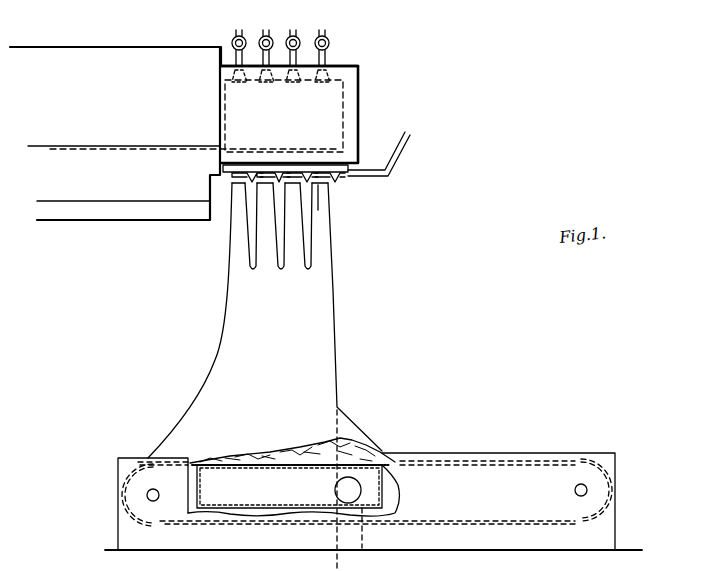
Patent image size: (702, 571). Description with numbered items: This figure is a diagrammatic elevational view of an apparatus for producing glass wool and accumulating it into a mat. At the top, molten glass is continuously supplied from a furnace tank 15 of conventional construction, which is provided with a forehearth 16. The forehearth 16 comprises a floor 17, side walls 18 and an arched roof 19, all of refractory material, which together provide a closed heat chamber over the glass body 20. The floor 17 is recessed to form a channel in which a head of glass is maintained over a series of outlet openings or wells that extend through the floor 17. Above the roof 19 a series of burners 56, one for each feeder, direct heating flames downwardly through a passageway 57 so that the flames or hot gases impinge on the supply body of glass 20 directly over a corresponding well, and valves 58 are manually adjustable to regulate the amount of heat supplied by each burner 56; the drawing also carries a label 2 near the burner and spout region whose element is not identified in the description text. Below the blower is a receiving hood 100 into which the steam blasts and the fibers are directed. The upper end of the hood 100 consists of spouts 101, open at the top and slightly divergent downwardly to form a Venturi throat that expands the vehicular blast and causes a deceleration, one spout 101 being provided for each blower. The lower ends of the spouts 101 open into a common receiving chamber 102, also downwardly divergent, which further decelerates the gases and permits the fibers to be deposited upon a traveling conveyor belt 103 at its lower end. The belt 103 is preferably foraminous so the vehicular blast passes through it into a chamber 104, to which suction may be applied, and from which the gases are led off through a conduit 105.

The furnace tank 15 is at (132, 63).
The glass body 20 is at (176, 150).
The valves 58 is at (257, 26).
The burners 56 is at (268, 55).
The conductor 2 is at (303, 52).
The arched roof 19 is at (338, 63).
The passageway 57 is at (328, 78).
The forehearth 16 is at (360, 98).
The side walls 18 is at (350, 117).
The floor 17 is at (348, 152).
The spouts 101 is at (290, 246).
The receiving chamber 102 is at (317, 327).
The receiving hood 100 is at (338, 361).
The conveyor belt 103 is at (277, 465).
The chamber 104 is at (292, 468).
The conduit 105 is at (338, 493).